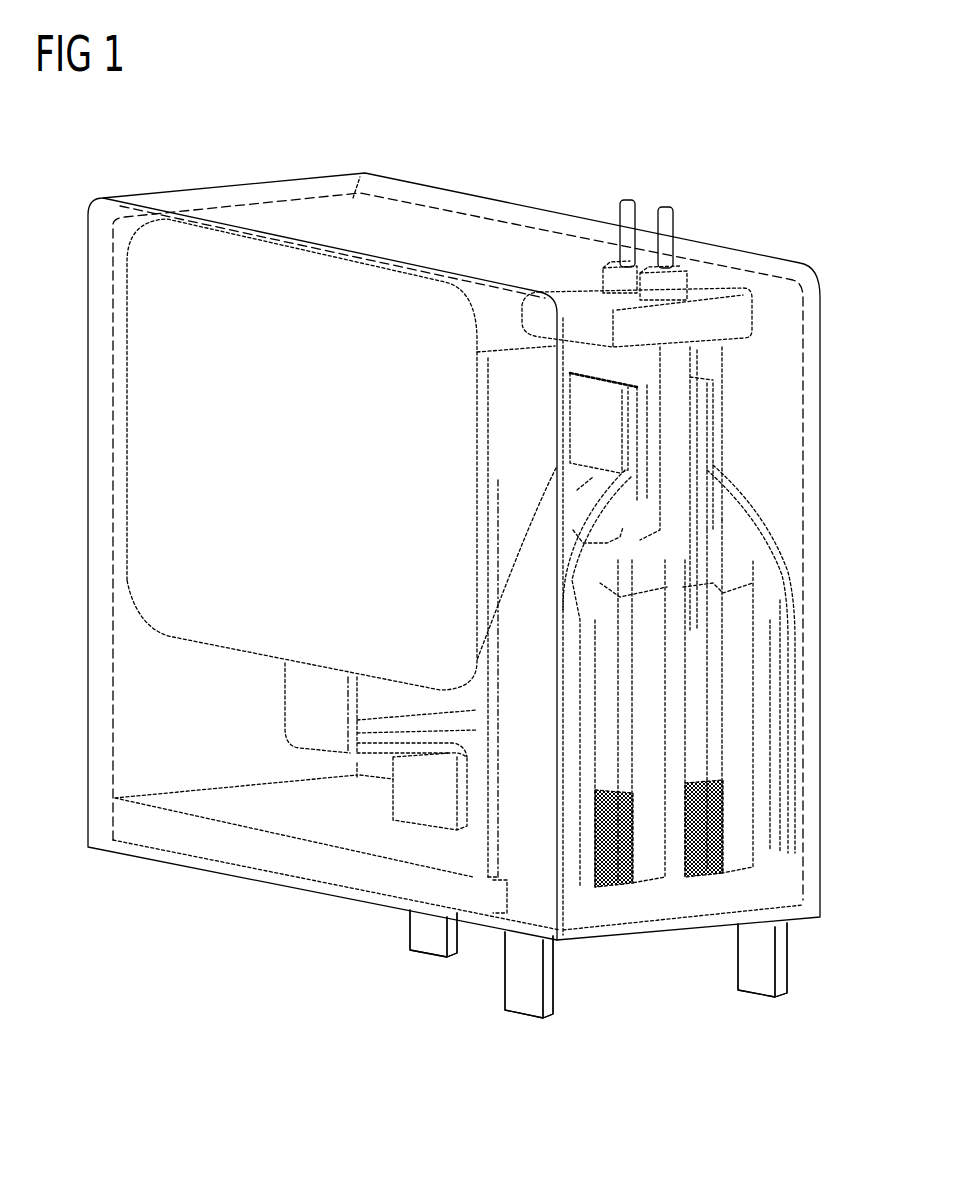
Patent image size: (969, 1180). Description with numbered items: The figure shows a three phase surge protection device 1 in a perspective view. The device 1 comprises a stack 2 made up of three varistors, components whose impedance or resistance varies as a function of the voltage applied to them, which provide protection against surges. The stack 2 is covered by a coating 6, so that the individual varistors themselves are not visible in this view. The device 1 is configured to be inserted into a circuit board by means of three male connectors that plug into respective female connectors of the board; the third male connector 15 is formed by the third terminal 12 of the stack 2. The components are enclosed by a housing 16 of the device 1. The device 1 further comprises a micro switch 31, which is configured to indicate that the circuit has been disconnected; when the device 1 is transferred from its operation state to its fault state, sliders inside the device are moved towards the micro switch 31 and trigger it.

The three phase surge protection device 1 is at (656, 168).
The stack 2 is at (143, 240).
The coating 6 is at (147, 350).
The third terminal 12 is at (420, 930).
The third male connector 15 is at (420, 930).
The housing 16 is at (103, 592).
The micro switch 31 is at (737, 317).